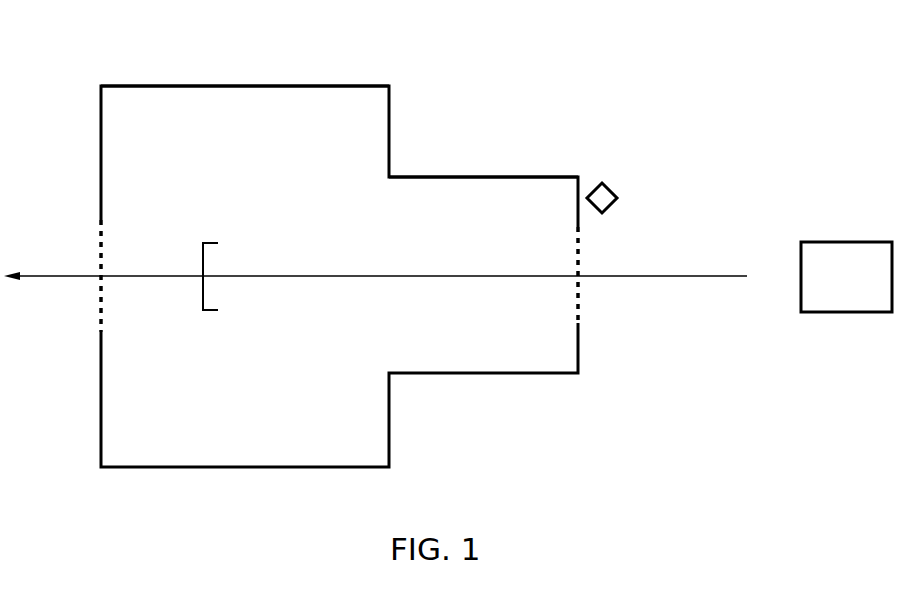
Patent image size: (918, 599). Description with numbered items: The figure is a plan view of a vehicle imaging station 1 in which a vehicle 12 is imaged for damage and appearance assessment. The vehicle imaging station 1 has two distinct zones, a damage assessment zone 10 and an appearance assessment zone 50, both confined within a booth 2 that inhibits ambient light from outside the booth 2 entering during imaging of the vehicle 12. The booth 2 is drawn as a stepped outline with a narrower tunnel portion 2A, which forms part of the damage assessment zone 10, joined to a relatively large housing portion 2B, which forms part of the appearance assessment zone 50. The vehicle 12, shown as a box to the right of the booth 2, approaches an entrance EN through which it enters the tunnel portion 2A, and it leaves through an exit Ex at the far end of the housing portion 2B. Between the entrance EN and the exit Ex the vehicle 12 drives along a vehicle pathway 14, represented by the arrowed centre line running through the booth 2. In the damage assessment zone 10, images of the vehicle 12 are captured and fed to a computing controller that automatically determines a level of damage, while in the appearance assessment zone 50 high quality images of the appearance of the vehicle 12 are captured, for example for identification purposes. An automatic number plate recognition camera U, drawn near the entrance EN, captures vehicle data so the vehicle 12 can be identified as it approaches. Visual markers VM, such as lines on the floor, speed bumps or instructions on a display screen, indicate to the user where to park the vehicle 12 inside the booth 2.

The vehicle imaging station 1 is at (598, 55).
The booth 2 is at (399, 106).
The tunnel portion 2A is at (500, 176).
The housing portion 2B is at (260, 85).
The damage assessment zone 10 is at (496, 337).
The vehicle 12 is at (861, 289).
The vehicle pathway 14 is at (668, 275).
The appearance assessment zone 50 is at (274, 375).
The automatic number plate recognition camera U is at (606, 195).
The visual markers VM is at (205, 268).
The entrance EN is at (579, 296).
The exit Ex is at (100, 299).